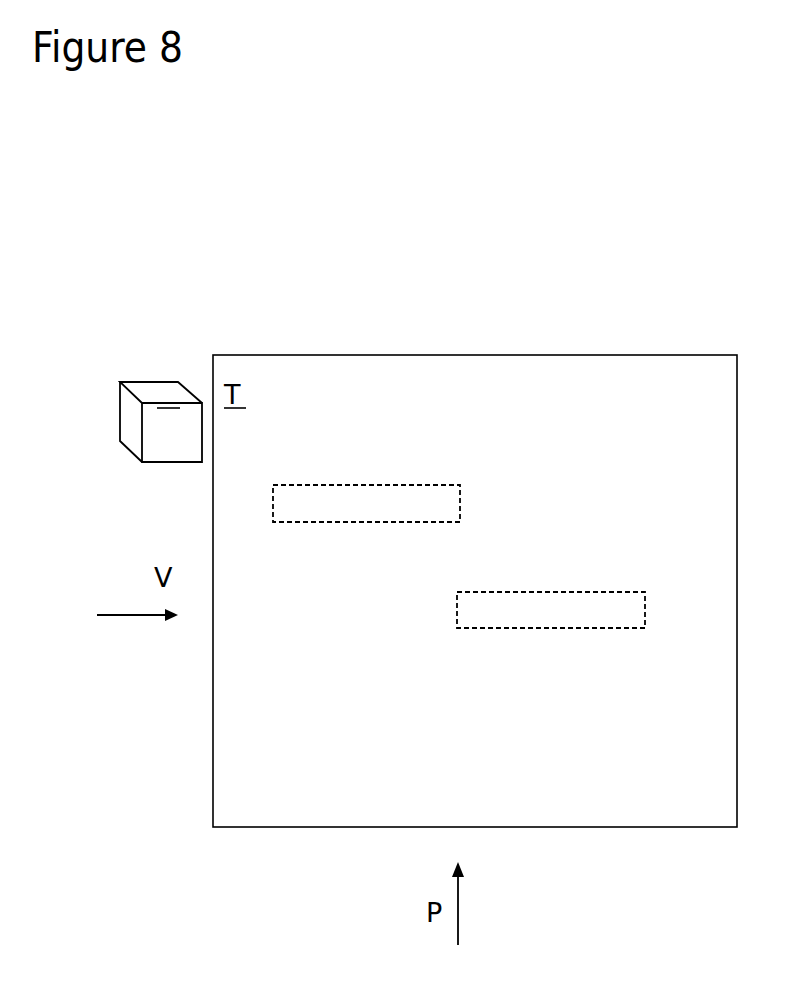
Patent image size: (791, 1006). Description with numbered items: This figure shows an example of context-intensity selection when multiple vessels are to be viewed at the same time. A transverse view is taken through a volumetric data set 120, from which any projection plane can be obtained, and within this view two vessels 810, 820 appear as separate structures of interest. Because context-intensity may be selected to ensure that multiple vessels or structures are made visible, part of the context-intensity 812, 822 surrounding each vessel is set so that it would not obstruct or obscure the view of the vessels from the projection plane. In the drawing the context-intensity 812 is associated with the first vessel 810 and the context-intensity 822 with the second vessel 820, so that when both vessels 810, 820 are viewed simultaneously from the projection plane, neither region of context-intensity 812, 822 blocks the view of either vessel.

The volumetric data set 120 is at (156, 480).
The vessel 810 is at (518, 516).
The context-intensity 812 is at (348, 518).
The vessel 820 is at (348, 623).
The context-intensity 822 is at (518, 623).